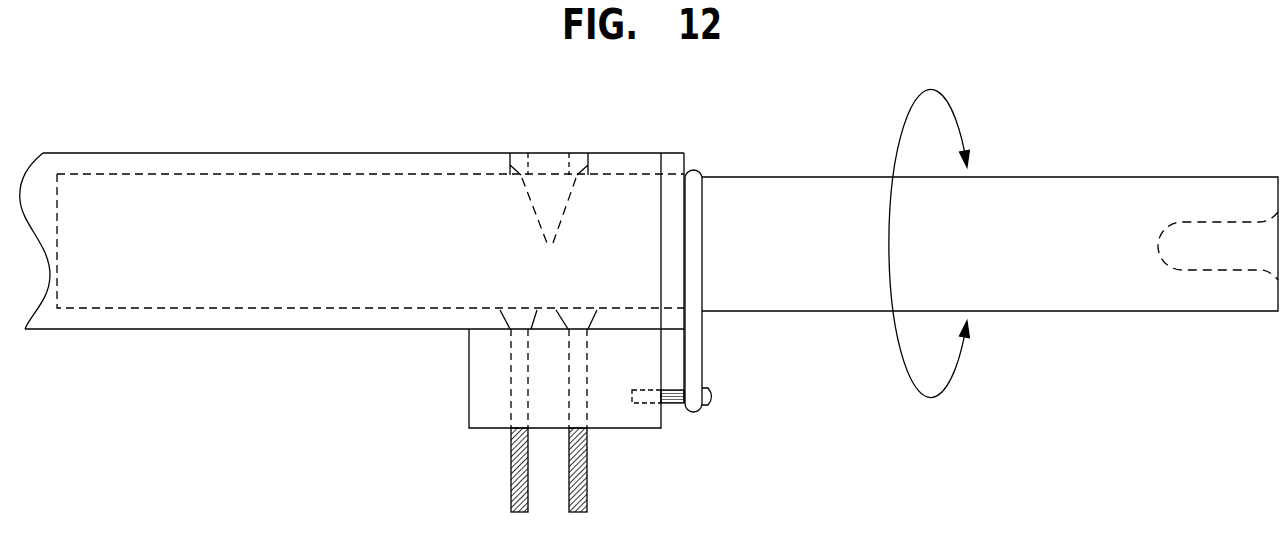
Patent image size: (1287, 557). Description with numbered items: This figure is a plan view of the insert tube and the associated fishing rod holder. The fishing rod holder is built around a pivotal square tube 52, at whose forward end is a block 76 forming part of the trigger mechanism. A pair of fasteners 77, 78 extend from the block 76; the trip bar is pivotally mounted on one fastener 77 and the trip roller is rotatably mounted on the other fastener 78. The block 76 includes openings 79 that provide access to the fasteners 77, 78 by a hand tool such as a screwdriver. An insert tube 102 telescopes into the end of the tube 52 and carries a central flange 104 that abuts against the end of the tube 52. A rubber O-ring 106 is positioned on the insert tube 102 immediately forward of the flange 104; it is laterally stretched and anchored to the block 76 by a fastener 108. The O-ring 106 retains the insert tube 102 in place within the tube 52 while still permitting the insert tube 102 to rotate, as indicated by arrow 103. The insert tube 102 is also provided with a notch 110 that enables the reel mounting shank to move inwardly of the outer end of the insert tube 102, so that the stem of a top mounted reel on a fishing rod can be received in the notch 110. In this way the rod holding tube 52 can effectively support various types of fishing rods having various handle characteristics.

The square tube 52 is at (256, 318).
The block 76 is at (478, 374).
The fastener 77 is at (511, 470).
The fastener 78 is at (587, 470).
The openings 79 is at (549, 216).
The insert tube 102 is at (1066, 195).
The arrow 103 is at (955, 120).
The central flange 104 is at (675, 158).
The rubber O-ring 106 is at (694, 345).
The fastener 108 is at (710, 397).
The notch 110 is at (1219, 271).